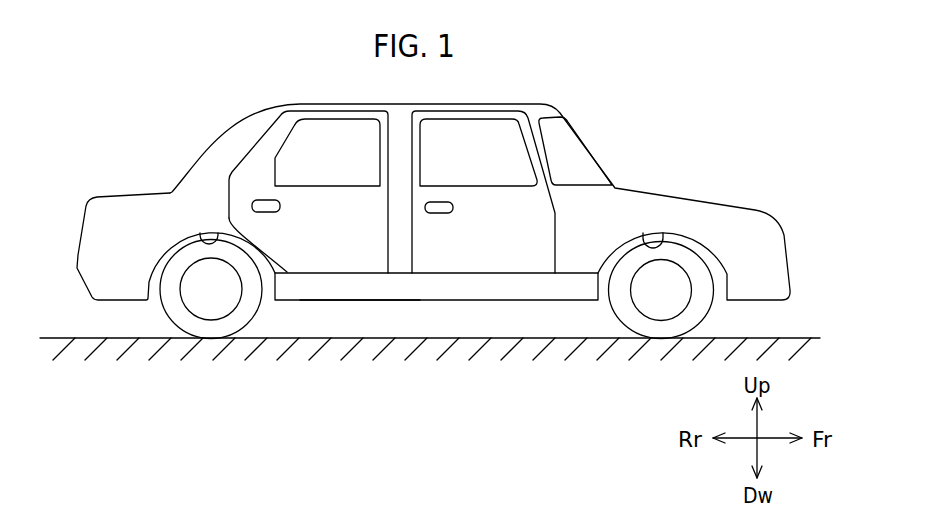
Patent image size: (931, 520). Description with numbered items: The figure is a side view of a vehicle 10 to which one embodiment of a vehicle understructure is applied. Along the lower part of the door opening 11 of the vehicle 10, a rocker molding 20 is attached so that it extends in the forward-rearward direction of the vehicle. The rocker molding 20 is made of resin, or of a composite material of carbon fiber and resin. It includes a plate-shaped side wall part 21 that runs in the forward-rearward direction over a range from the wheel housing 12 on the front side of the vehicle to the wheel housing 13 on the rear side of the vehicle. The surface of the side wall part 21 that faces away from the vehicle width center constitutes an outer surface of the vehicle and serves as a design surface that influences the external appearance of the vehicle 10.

The vehicle 10 is at (626, 142).
The door opening 11 is at (379, 273).
The wheel housing 12 is at (655, 233).
The wheel housing 13 is at (203, 232).
The rocker molding 20 is at (405, 295).
The side wall part 21 is at (357, 293).